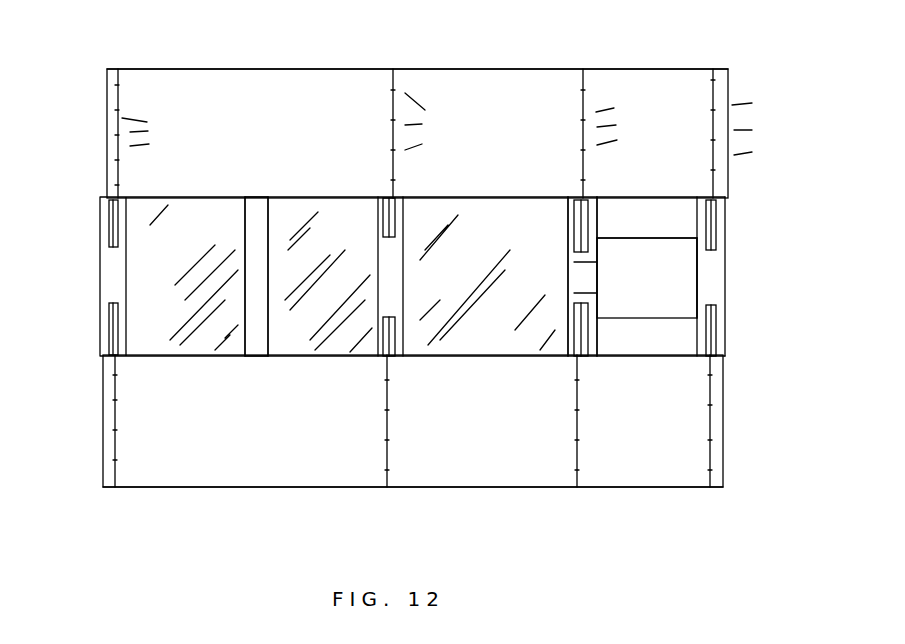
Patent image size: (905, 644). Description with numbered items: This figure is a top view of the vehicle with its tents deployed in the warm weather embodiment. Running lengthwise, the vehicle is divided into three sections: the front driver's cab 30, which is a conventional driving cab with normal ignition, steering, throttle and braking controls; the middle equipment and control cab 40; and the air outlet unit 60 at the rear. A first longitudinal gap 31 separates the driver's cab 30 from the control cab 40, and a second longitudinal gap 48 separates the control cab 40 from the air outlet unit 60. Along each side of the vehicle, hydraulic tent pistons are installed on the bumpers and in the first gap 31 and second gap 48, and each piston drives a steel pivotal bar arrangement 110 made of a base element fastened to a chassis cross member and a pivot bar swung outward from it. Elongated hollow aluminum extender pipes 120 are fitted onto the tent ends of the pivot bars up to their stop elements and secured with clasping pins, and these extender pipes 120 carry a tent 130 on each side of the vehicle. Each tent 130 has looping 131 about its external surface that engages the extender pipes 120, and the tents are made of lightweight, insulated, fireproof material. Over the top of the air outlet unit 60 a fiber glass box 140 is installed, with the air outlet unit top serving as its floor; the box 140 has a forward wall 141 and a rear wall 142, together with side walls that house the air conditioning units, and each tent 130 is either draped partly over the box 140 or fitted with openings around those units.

The front driver's cab 30 is at (287, 215).
The first longitudinal gap 31 is at (375, 198).
The middle equipment and control cab 40 is at (502, 212).
The second longitudinal gap 48 is at (593, 197).
The air outlet unit 60 is at (660, 243).
The pivotal bar arrangement 110 is at (110, 237).
The extender pipes 120 is at (120, 102).
The tent 130 is at (520, 82).
The looping 131 is at (465, 124).
The fiber glass box 140 is at (663, 293).
The forward wall 141 is at (597, 258).
The rear wall 142 is at (697, 280).